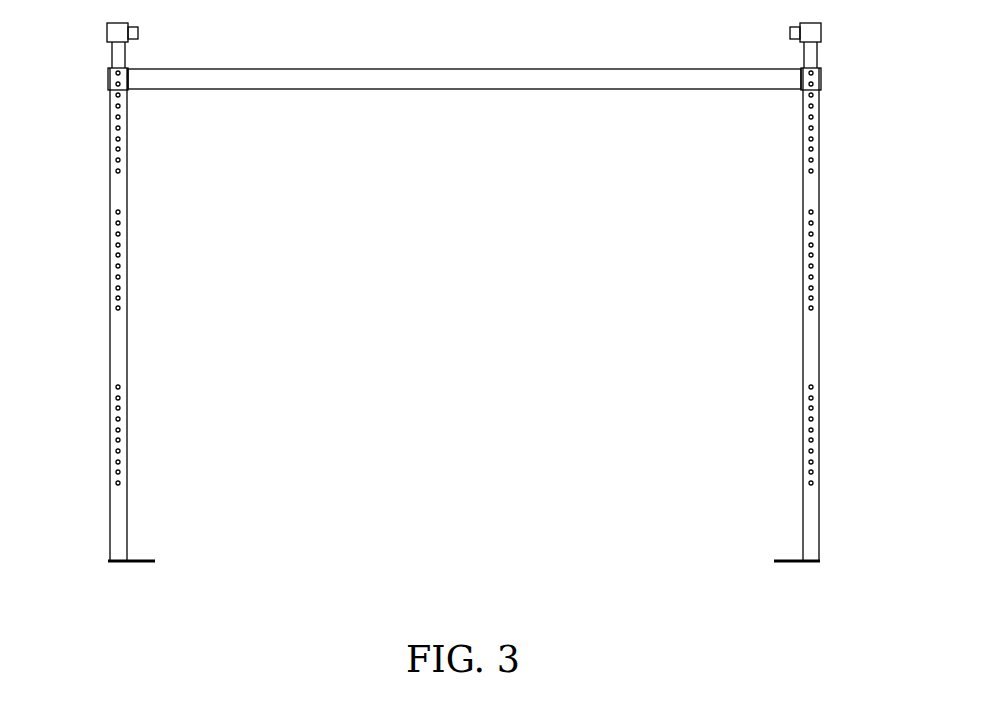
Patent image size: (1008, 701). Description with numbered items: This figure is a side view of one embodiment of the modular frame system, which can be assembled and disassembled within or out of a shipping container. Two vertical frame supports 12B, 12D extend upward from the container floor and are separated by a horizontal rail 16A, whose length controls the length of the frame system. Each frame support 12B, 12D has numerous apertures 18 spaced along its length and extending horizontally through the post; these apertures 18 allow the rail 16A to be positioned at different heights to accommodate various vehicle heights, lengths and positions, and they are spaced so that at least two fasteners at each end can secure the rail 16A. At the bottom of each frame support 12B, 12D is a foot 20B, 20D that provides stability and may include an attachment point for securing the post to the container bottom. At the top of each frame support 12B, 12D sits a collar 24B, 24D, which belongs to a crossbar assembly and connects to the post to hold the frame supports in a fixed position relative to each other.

The frame support 12B is at (110, 343).
The frame support 12D is at (819, 343).
The rail 16A is at (465, 69).
The apertures 18 is at (116, 255).
The foot 20B is at (140, 562).
The foot 20D is at (788, 562).
The collar 24B is at (107, 33).
The collar 24D is at (821, 33).